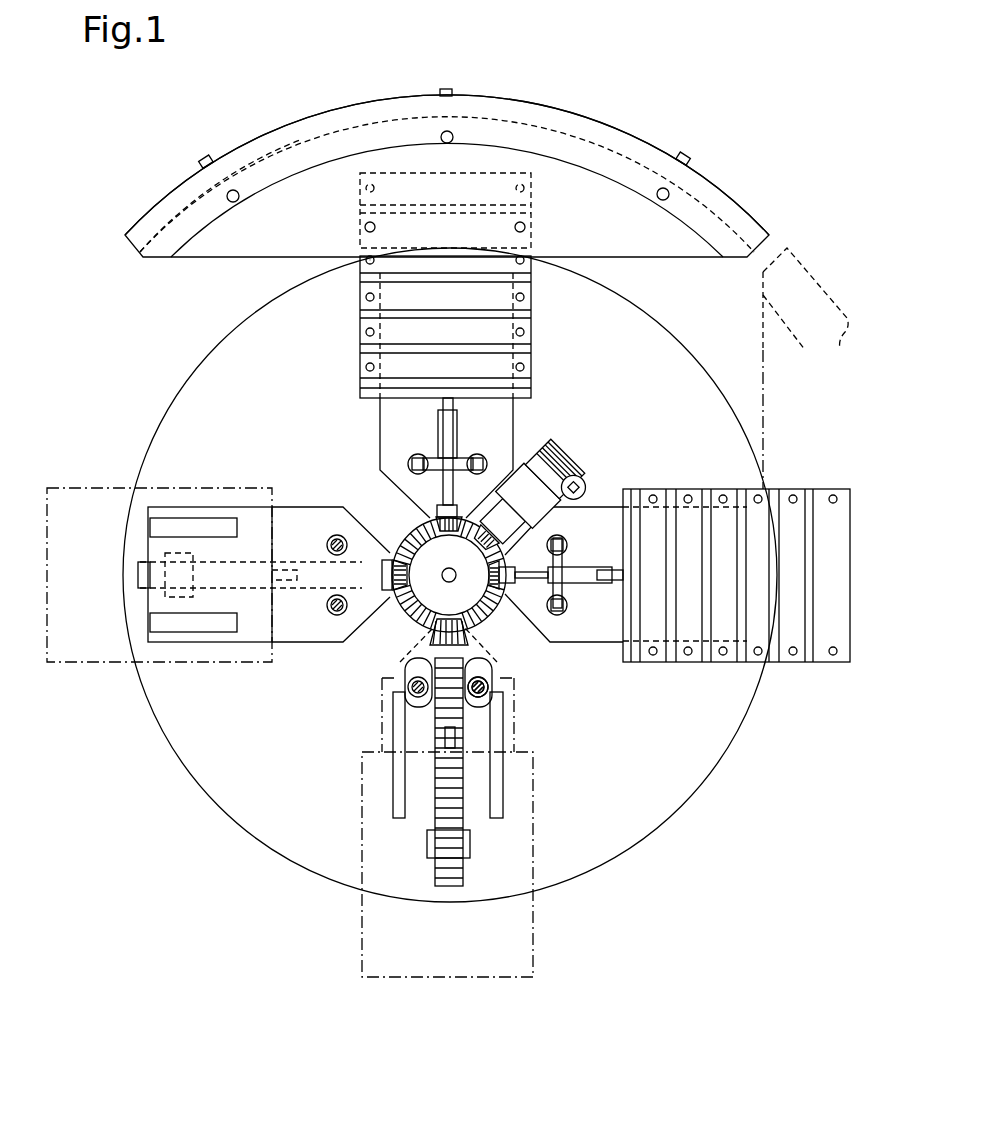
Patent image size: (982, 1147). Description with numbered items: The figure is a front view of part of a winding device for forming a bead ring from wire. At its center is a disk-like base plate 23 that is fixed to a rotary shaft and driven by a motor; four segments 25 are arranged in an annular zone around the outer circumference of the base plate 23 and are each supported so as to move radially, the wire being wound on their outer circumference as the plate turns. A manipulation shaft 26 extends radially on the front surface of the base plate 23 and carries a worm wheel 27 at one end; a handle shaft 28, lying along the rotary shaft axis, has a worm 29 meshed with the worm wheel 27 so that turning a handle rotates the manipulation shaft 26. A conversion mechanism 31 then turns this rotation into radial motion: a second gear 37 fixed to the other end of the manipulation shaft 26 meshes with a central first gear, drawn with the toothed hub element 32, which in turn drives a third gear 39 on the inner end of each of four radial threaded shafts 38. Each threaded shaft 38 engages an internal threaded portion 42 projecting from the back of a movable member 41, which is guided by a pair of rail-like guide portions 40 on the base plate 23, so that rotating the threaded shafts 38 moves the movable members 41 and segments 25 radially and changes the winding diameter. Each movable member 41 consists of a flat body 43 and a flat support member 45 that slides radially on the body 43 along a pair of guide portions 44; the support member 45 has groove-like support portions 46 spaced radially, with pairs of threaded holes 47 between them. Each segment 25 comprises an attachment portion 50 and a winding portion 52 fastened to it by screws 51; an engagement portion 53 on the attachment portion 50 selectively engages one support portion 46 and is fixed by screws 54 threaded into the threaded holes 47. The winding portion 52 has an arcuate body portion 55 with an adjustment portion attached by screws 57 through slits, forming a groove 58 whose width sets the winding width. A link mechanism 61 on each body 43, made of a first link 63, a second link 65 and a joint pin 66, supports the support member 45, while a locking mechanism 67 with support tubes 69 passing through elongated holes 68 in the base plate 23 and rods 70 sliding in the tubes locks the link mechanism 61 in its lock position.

The base plate 23 is at (186, 384).
The segment 25 is at (492, 270).
The manipulation shaft 26 is at (502, 521).
The worm wheel 27 is at (545, 490).
The handle shaft 28 is at (542, 460).
The worm 29 is at (554, 468).
The conversion mechanism 31 is at (372, 419).
The ring gear 32 is at (410, 541).
The second gear 37 is at (434, 566).
The threaded shaft 38 is at (285, 570).
The third gear 39 is at (344, 524).
The guide portion 40 is at (392, 805).
The movable member 41 is at (448, 616).
The internal threaded portion 42 is at (164, 553).
The body 43 is at (515, 410).
The guide portion 44 is at (186, 518).
The support member 45 is at (529, 326).
The support portion 46 is at (360, 352).
The threaded hole 47 is at (523, 297).
The attachment portion 50 is at (210, 258).
The screw 51 is at (235, 190).
The winding portion 52 is at (505, 106).
The engagement portion 53 is at (358, 230).
The screw 54 is at (365, 226).
The body portion 55 is at (577, 123).
The screw 57 is at (207, 160).
The groove 58 is at (275, 149).
The link mechanism 61 is at (439, 421).
The first link 63 is at (446, 489).
The second link 65 is at (456, 437).
The joint pin 66 is at (425, 461).
The locking mechanism 67 is at (335, 535).
The elongated hole 68 is at (475, 661).
The support tube 69 is at (470, 686).
The rod 70 is at (327, 603).